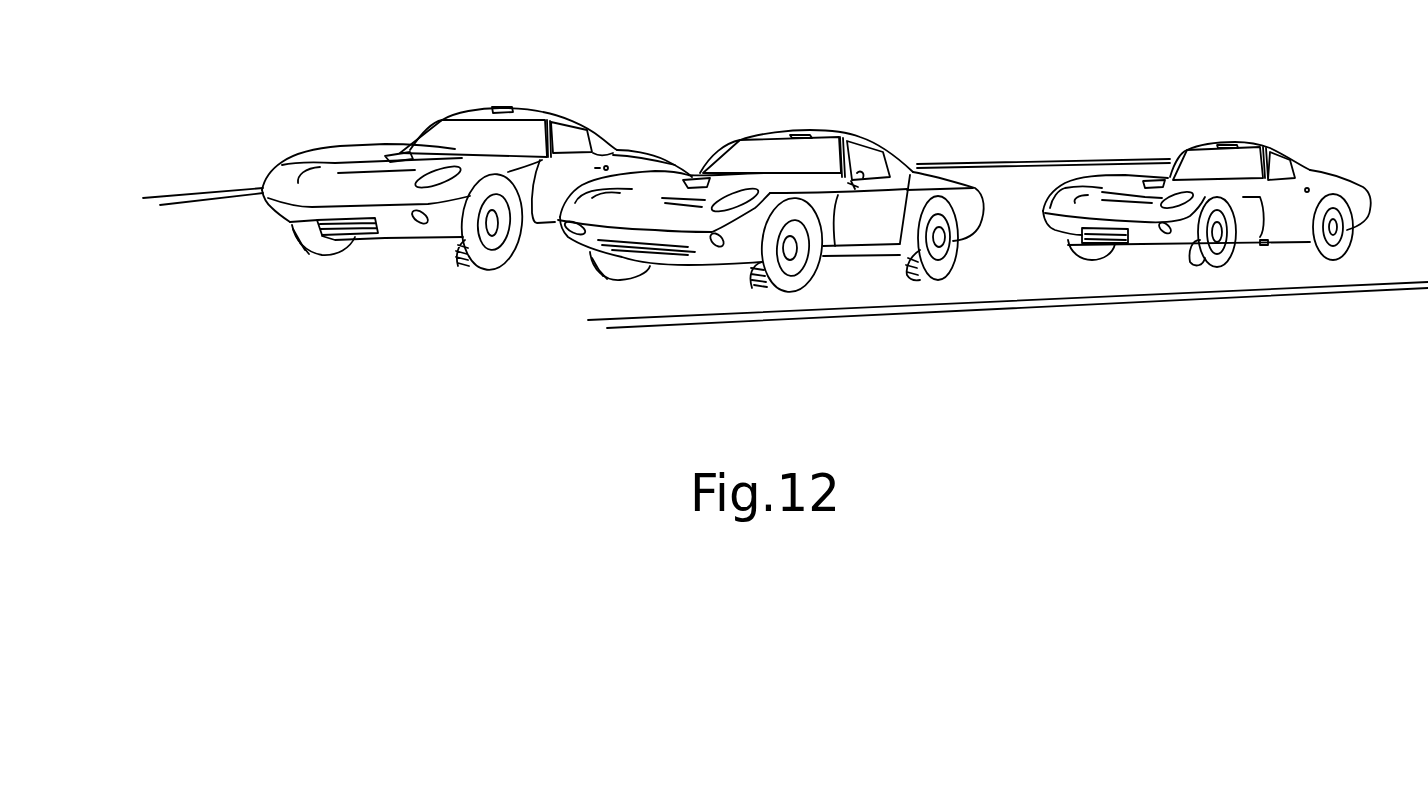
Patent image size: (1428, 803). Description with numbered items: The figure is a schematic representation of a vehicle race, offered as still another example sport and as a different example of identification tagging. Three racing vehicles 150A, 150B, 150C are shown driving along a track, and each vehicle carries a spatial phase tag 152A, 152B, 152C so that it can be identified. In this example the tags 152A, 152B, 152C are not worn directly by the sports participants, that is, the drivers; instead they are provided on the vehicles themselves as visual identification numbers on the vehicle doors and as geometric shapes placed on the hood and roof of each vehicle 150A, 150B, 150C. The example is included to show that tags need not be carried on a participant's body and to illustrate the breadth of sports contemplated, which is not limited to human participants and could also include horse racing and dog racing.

The vehicle 150A is at (603, 143).
The vehicle 150B is at (898, 165).
The vehicle 150C is at (1308, 170).
The spatial phase tag 152A is at (404, 154).
The spatial phase tag 152B is at (705, 178).
The spatial phase tag 152C is at (1160, 180).